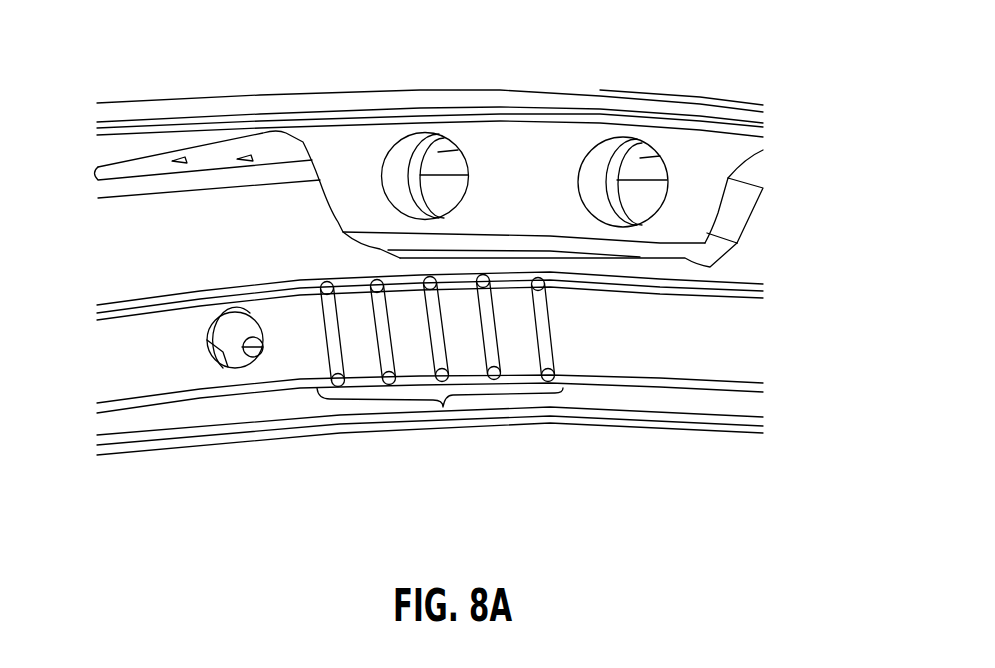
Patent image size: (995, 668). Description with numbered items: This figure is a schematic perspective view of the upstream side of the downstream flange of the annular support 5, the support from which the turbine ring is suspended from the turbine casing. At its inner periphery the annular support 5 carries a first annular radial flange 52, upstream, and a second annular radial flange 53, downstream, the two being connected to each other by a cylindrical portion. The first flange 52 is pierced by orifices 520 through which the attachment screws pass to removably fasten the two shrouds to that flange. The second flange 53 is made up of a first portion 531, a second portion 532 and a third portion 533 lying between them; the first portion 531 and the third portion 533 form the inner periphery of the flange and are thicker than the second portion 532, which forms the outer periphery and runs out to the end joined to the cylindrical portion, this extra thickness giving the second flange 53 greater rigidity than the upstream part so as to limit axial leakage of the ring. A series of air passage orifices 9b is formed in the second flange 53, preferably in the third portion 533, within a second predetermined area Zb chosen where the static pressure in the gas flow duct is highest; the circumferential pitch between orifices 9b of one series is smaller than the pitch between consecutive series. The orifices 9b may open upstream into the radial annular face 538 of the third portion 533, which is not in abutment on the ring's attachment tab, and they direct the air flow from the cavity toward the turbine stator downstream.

The annular support 5 is at (533, 91).
The first annular radial flange 52 is at (710, 172).
The orifices 520 is at (623, 136).
The second portion 532 is at (752, 227).
The radial annular face 538 is at (723, 290).
The second annular radial flange 53 is at (731, 327).
The third portion 533 is at (735, 353).
The first portion 531 is at (652, 396).
The orifices 9b is at (537, 350).
The second predetermined area Zb is at (443, 408).